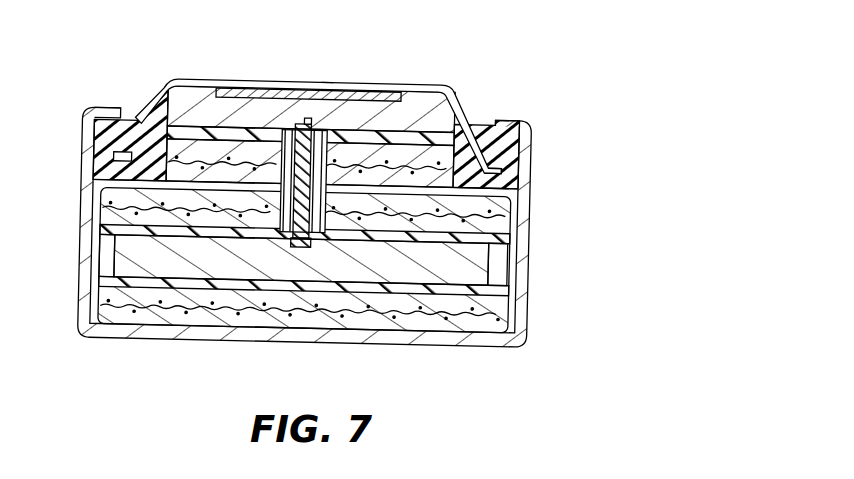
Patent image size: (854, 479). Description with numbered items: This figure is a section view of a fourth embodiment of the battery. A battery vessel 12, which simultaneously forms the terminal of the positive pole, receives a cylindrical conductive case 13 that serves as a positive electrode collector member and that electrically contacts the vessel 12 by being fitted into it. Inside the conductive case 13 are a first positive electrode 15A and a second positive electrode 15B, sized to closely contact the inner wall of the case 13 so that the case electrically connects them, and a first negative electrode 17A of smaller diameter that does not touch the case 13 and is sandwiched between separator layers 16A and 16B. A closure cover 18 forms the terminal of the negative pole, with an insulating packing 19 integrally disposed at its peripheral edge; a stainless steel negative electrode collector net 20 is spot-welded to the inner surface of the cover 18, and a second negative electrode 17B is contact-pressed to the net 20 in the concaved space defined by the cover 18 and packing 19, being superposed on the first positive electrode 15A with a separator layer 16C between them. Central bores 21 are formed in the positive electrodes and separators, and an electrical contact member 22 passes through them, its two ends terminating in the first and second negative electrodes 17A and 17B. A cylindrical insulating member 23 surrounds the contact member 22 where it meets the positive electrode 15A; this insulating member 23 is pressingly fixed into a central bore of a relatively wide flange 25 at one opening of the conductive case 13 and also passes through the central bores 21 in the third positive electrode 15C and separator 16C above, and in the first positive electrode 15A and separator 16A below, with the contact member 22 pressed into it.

The battery vessel 12 is at (158, 342).
The conductive case 13 is at (98, 199).
The first positive electrode 15A is at (507, 213).
The second positive electrode 15B is at (500, 334).
The third positive electrode 15C is at (150, 120).
The separator layer 16A is at (105, 230).
The separator layer 16B is at (105, 284).
The separator layer 16C is at (175, 134).
The first negative electrode 17A is at (480, 268).
The second negative electrode 17B is at (228, 108).
The closure cover 18 is at (420, 88).
The insulating packing 19 is at (88, 112).
The negative electrode collector net 20 is at (328, 93).
The central bores 21 is at (270, 245).
The electrical contact member 22 is at (302, 250).
The insulating member 23 is at (322, 88).
The flange 25 is at (500, 178).